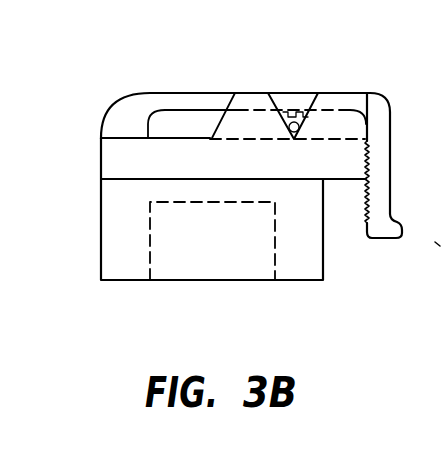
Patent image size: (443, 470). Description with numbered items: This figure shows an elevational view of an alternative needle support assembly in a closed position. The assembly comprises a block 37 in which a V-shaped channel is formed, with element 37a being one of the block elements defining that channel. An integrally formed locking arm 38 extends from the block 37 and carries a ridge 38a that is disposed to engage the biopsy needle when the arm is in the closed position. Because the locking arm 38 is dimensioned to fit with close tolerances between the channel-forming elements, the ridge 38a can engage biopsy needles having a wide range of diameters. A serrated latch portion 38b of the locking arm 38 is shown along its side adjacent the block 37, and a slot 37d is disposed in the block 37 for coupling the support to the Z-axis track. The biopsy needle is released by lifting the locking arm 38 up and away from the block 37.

The block 37 is at (99, 228).
The element 37a is at (332, 103).
The slot 37d is at (152, 250).
The locking arm 38 is at (180, 98).
The ridge 38a is at (310, 124).
The serrated engaging portion 38b is at (363, 222).